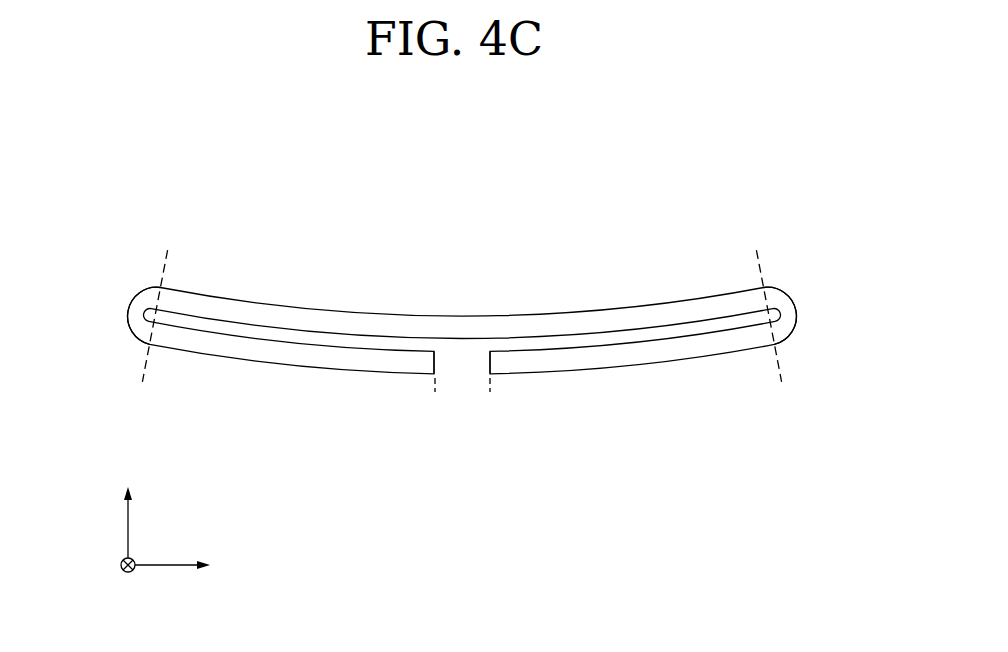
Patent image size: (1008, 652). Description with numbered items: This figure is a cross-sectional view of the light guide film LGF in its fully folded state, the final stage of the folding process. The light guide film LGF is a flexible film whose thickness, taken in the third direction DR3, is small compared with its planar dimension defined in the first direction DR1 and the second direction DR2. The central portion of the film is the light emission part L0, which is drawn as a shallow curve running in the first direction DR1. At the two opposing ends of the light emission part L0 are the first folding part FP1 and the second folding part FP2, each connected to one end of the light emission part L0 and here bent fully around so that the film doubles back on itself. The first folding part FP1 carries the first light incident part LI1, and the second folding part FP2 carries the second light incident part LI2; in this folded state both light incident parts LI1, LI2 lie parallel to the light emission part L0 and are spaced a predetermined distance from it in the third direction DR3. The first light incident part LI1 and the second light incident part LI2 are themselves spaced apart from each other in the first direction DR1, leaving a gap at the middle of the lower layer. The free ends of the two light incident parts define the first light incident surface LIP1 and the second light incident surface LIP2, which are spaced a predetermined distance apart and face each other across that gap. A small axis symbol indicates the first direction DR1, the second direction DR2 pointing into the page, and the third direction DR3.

The light guide film LGF is at (618, 203).
The first folding part FP1 is at (771, 268).
The second folding part FP2 is at (153, 268).
The light emission part L0 is at (759, 265).
The first light incident part LI1 is at (779, 367).
The second light incident part LI2 is at (435, 397).
The first light incident surface LIP1 is at (487, 362).
The second light incident surface LIP2 is at (437, 362).
The first direction DR1 is at (191, 565).
The second direction DR2 is at (127, 578).
The third direction DR3 is at (128, 508).